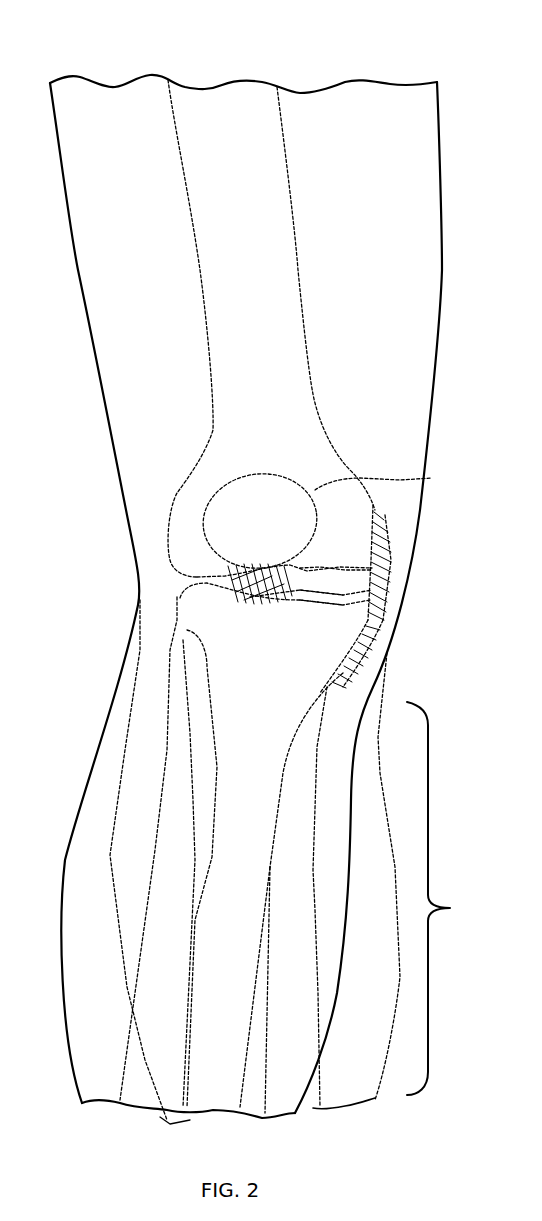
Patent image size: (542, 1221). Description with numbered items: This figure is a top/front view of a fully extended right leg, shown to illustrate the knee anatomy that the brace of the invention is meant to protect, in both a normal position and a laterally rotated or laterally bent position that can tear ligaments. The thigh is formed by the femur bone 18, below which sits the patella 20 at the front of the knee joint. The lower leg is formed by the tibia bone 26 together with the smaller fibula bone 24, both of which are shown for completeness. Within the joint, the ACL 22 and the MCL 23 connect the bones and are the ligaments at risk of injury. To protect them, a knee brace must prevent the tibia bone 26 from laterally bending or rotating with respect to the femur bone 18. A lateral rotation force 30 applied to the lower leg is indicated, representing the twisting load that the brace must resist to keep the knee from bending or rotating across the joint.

The femur bone 18 is at (237, 107).
The patella 20 is at (432, 478).
The ACL 22 is at (395, 584).
The MCL 23 is at (390, 552).
The tibia bone 26 is at (347, 677).
The fibula bone 24 is at (193, 793).
The lateral rotation force 30 is at (445, 898).